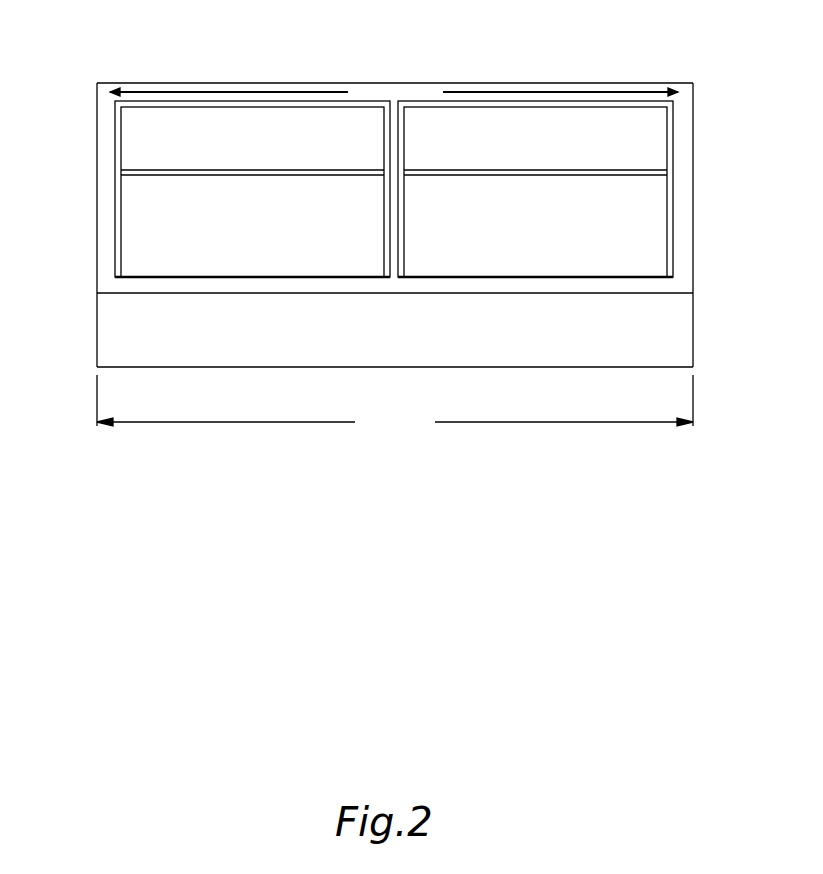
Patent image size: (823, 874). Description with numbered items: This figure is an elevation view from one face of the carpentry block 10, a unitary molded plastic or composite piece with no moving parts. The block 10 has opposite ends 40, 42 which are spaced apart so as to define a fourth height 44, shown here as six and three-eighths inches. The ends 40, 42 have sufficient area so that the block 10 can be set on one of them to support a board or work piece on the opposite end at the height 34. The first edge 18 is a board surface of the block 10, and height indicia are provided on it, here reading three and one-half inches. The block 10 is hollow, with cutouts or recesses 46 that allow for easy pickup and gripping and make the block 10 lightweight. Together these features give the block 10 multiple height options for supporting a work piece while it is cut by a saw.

The carpentry block 10 is at (572, 61).
The first edge 18 is at (213, 348).
The height 34 is at (230, 92).
The first end 40 is at (97, 143).
The second end 42 is at (693, 135).
The fourth height 44 is at (530, 424).
The cutouts or recesses 46 is at (148, 201).